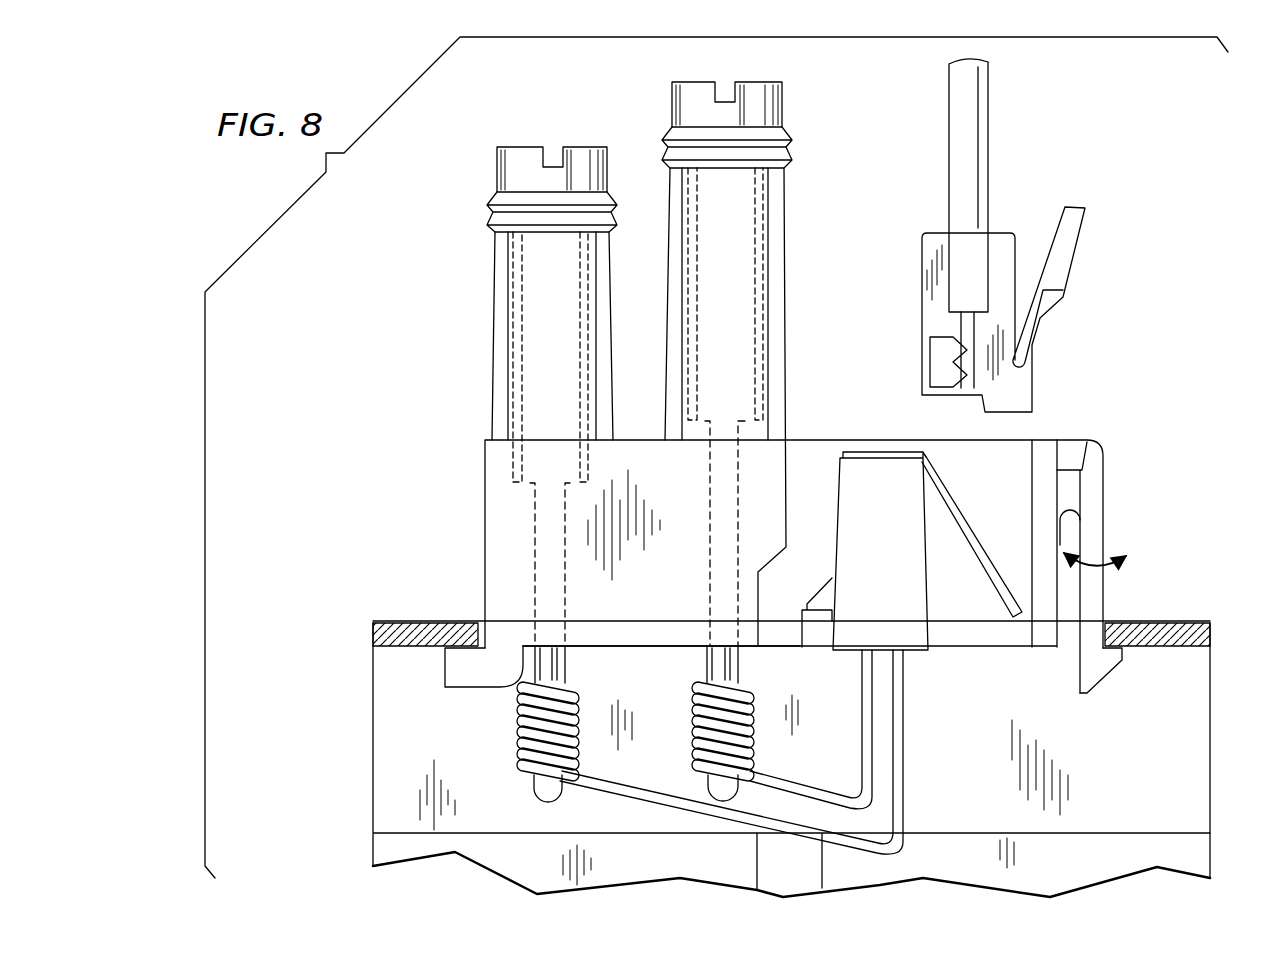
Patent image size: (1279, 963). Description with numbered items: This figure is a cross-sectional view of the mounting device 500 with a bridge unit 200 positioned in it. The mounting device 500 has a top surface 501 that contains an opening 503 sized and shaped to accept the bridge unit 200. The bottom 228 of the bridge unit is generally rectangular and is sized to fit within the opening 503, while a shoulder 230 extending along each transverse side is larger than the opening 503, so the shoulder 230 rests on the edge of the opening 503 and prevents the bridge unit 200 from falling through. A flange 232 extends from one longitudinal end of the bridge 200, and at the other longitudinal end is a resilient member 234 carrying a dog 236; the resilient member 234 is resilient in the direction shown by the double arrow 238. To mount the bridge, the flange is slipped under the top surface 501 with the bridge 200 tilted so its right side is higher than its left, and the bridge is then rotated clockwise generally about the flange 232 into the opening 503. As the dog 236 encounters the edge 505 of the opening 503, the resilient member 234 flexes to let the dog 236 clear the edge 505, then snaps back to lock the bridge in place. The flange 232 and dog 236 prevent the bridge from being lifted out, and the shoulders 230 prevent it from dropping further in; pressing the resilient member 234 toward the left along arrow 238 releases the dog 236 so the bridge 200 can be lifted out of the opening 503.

The bridge unit 200 is at (448, 312).
The bottom 228 is at (612, 632).
The shoulder 230 is at (637, 621).
The flange 232 is at (465, 672).
The resilient member 234 is at (1087, 607).
The dog 236 is at (1108, 661).
The arrow 238 is at (1114, 550).
The mounting device 500 is at (352, 684).
The top surface 501 is at (1210, 623).
The opening 503 is at (478, 627).
The edge 505 is at (1108, 630).